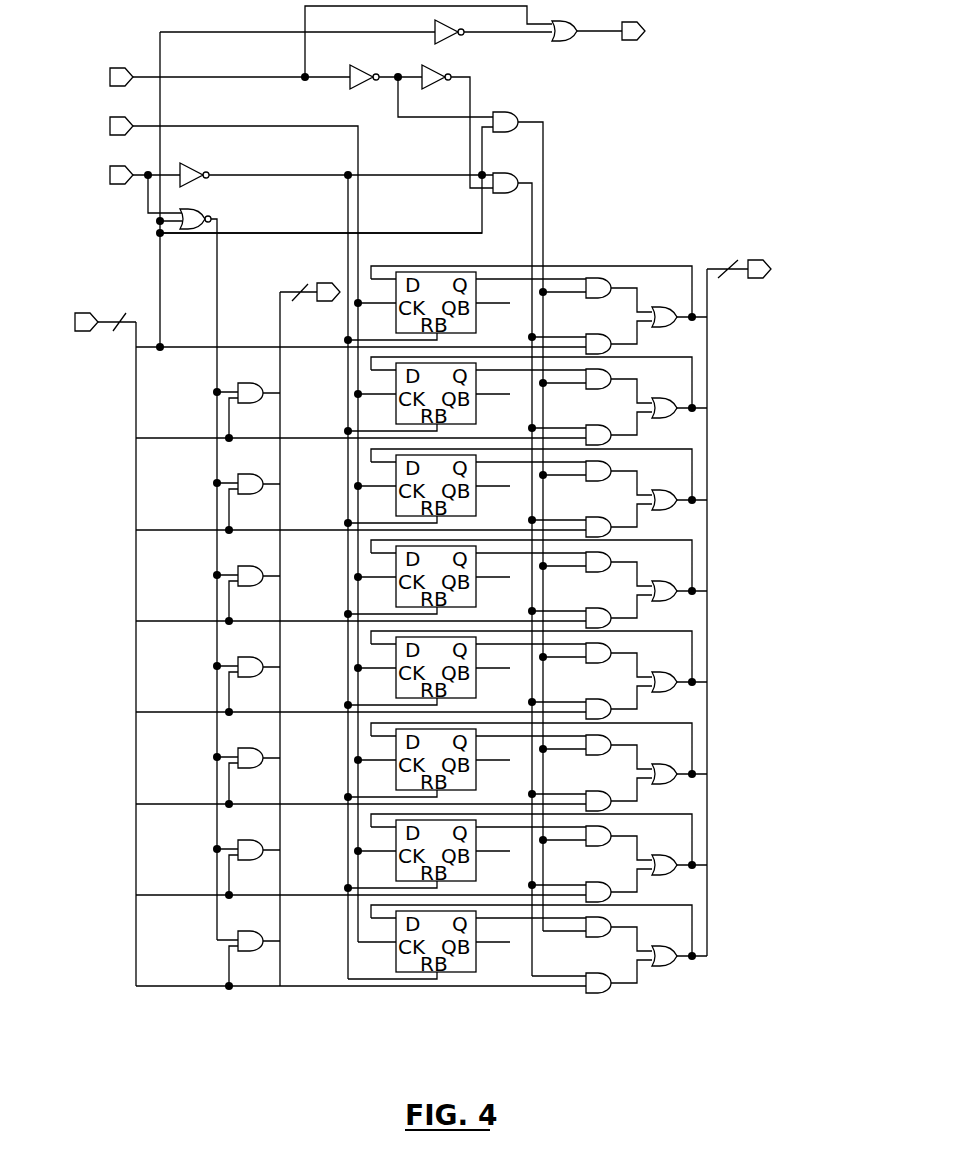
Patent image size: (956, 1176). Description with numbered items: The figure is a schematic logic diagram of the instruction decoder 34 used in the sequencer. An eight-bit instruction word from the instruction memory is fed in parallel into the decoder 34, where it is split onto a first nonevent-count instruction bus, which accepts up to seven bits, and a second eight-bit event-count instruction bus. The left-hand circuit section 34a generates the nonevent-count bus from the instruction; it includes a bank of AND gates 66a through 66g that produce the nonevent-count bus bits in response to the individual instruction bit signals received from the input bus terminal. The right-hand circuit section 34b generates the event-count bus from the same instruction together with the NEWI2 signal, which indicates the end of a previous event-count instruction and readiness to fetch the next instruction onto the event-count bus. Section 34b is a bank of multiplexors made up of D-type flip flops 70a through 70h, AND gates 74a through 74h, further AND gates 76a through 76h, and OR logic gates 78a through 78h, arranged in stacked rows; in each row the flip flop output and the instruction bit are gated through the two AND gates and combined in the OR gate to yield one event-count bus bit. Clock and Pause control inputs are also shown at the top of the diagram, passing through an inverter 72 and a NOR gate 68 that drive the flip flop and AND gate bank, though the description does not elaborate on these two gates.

The instruction decoder 34 is at (418, 548).
The circuit section 34a is at (100, 679).
The circuit section 34b is at (751, 684).
The AND gate 66a is at (249, 385).
The AND gate 66g is at (248, 934).
The NOR gate 68 is at (197, 212).
The D-type flip flop 70a is at (442, 270).
The D-type flip flop 70h is at (460, 970).
The inverter 72 is at (187, 167).
The AND gate 74a is at (598, 279).
The AND gate 74h is at (586, 938).
The AND gate 76a is at (598, 336).
The AND gate 76h is at (598, 973).
The OR logic gate 78a is at (666, 308).
The OR logic gate 78h is at (666, 946).